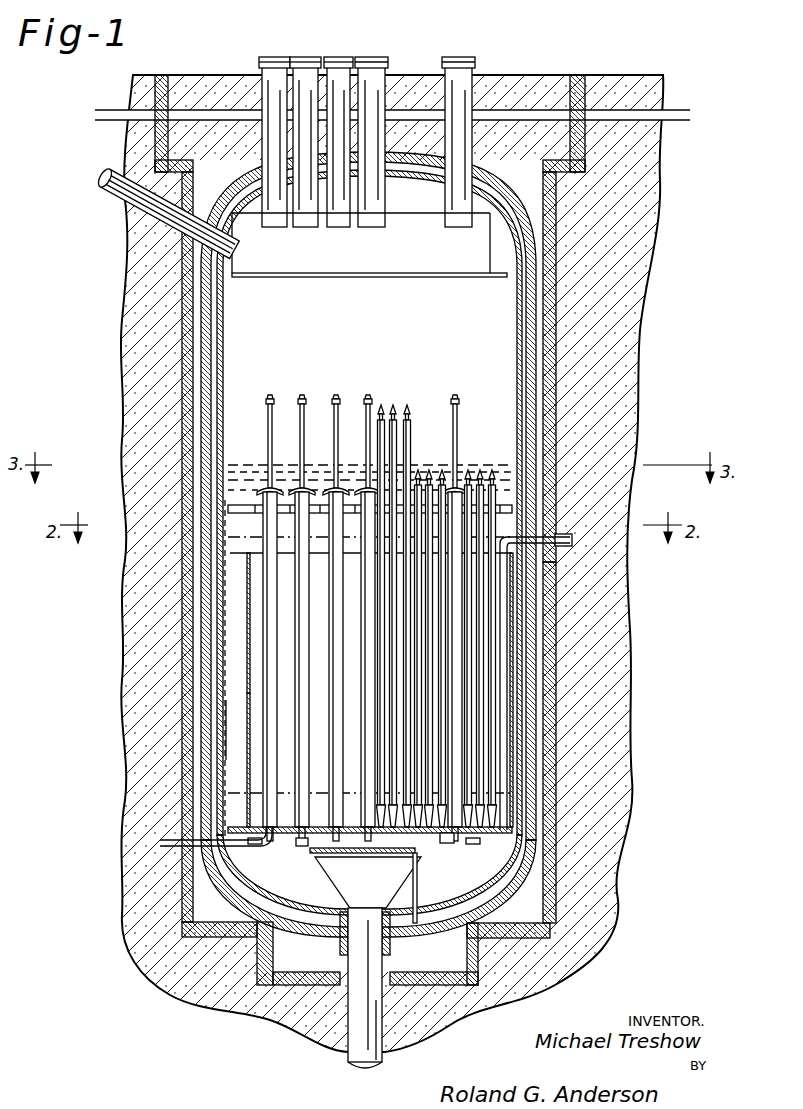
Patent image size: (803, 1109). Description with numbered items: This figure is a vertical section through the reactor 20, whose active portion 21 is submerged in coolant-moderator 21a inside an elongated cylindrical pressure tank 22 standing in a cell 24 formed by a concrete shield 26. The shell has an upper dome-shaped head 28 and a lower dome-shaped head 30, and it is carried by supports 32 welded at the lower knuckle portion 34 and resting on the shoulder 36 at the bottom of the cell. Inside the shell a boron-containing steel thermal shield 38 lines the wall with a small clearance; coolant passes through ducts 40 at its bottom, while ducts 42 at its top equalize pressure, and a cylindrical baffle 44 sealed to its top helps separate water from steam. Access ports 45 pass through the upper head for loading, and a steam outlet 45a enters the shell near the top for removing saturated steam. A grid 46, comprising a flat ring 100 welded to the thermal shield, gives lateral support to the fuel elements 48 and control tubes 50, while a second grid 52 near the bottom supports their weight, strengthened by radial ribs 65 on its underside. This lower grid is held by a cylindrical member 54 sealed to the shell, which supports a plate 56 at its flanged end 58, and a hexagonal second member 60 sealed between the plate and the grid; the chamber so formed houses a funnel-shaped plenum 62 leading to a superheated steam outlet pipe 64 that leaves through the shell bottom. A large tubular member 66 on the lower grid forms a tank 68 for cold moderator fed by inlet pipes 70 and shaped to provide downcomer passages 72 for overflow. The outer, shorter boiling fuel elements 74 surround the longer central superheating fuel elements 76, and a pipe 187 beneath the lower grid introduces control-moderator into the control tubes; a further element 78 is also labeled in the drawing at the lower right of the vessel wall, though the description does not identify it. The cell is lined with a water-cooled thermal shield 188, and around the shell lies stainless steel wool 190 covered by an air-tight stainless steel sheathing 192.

The reactor 20 is at (196, 270).
The active portion 21 is at (216, 740).
The coolant-moderator 21a is at (314, 465).
The pressure tank 22 is at (220, 302).
The cell 24 is at (185, 350).
The concrete shield 26 is at (135, 424).
The dome-shaped head 28 is at (388, 172).
The dome-shaped head 30 is at (404, 928).
The supports 32 is at (200, 862).
The knuckle portion 34 is at (215, 880).
The shoulder 36 is at (507, 923).
The thermal shield 38 is at (223, 338).
The ducts 40 is at (312, 908).
The ducts 42 is at (318, 227).
The cylindrical baffle 44 is at (350, 273).
The access ports 45 is at (445, 58).
The steam outlet 45a is at (108, 186).
The grid 46 is at (240, 500).
The fuel elements 48 is at (395, 637).
The control tubes 50 is at (300, 668).
The second grid 52 is at (517, 823).
The cylindrical member 54 is at (417, 895).
The plate 56 is at (454, 840).
The flanged end 58 is at (418, 858).
The second member 60 is at (302, 846).
The funnel-shaped plenum 62 is at (380, 889).
The superheated steam outlet pipe 64 is at (350, 1052).
The radial ribs 65 is at (255, 844).
The tubular member 66 is at (247, 578).
The tank 68 is at (250, 713).
The coolant-moderator inlet pipes 70 is at (555, 540).
The downcomer passages 72 is at (223, 620).
The boiling fuel elements 74 is at (468, 468).
The superheating fuel elements 76 is at (402, 458).
The lower liner 78 is at (545, 800).
The flat ring 100 is at (228, 508).
The pipe 187 is at (172, 840).
The thermal shield 188 is at (185, 393).
The stainless steel wool 190 is at (533, 271).
The stainless steel sheathing 192 is at (535, 306).